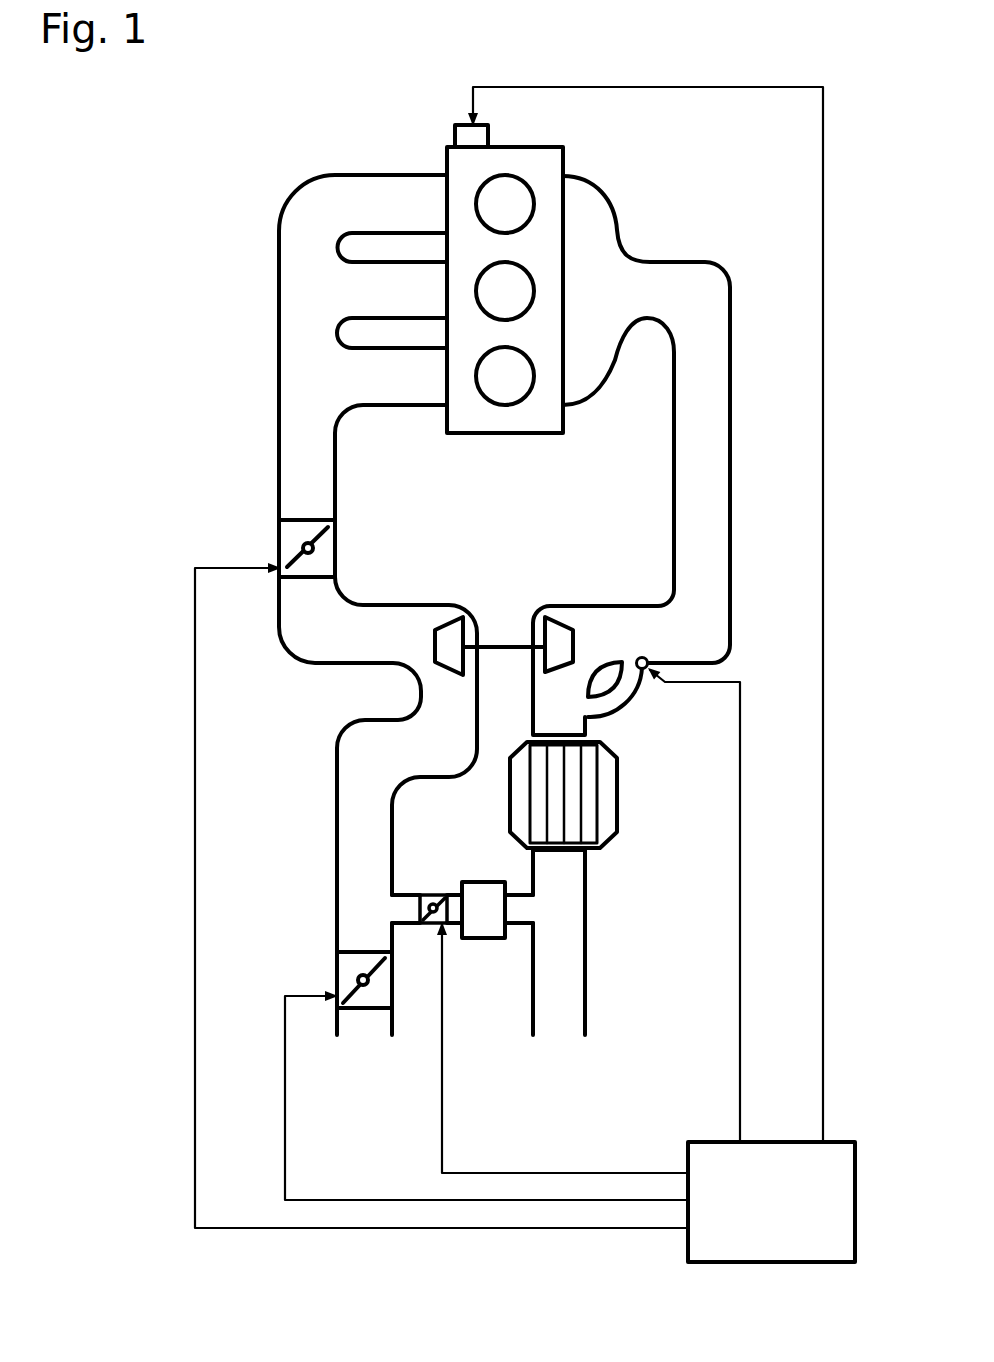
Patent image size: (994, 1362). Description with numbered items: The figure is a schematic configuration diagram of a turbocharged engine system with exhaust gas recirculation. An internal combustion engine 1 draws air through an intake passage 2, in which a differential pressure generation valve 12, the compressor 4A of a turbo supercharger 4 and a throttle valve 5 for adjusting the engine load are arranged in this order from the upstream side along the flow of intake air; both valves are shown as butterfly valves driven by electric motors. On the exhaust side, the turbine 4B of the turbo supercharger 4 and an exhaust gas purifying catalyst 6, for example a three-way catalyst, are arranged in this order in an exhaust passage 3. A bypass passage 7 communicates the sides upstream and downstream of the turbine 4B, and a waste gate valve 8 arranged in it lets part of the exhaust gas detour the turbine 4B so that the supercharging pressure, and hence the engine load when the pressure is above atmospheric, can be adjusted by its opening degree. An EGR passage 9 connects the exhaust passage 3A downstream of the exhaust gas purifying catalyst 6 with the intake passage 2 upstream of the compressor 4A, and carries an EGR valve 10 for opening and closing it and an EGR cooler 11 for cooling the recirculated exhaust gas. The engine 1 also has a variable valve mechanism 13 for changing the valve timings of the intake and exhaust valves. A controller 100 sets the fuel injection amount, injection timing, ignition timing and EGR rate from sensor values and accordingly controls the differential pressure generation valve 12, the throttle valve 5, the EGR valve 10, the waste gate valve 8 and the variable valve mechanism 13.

The internal combustion engine 1 is at (470, 178).
The intake passage 2 is at (345, 780).
The exhaust passage 3 is at (715, 489).
The exhaust passage downstream of the exhaust gas purifying catalyst 3A is at (570, 910).
The turbo supercharger 4 is at (513, 582).
The compressor 4A is at (452, 637).
The turbine 4B is at (557, 632).
The throttle valve 5 is at (290, 547).
The exhaust gas purifying catalyst 6 is at (617, 800).
The bypass passage 7 is at (617, 704).
The waste gate valve 8 is at (628, 678).
The EGR passage 9 is at (518, 912).
The EGR valve 10 is at (427, 926).
The EGR cooler 11 is at (473, 935).
The differential pressure generation valve 12 is at (338, 976).
The variable valve mechanism 13 is at (457, 125).
The controller 100 is at (833, 1153).